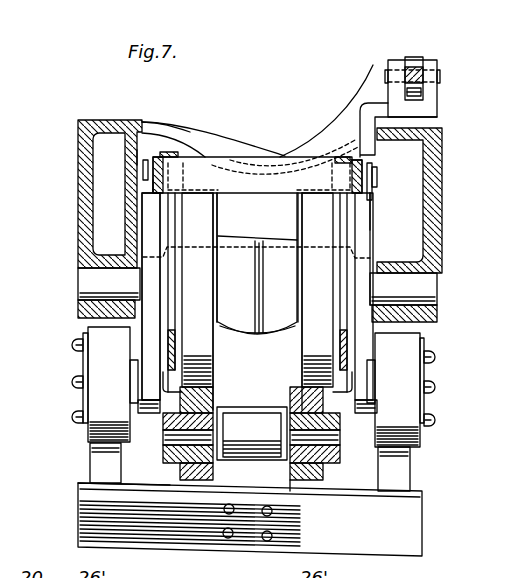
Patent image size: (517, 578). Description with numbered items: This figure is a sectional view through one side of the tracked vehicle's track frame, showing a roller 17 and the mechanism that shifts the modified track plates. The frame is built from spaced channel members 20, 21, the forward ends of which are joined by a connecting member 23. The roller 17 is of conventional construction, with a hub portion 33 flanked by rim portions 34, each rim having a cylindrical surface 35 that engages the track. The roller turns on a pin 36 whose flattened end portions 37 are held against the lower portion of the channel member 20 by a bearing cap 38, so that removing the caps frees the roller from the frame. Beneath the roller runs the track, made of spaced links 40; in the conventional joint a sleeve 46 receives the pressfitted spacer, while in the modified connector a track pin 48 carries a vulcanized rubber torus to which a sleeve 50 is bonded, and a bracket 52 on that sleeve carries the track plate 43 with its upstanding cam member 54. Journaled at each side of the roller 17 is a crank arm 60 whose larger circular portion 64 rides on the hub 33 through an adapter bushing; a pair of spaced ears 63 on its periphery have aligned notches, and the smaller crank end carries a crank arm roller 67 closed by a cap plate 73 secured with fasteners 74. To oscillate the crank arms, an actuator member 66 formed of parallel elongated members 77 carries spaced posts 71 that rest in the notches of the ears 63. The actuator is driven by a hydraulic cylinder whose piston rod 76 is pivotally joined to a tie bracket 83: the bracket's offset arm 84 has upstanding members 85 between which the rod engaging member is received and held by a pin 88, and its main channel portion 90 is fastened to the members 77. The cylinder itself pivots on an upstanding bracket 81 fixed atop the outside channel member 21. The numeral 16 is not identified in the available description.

The frame 16 is at (173, 469).
The roller 17 is at (283, 344).
The channel member 20 is at (88, 119).
The channel member 21 is at (442, 188).
The connecting member 23 is at (158, 124).
The hub portion 33 is at (257, 263).
The rim portion 34 is at (297, 226).
The cylindrical surface 35 is at (196, 183).
The pin 36 is at (148, 289).
The flattened end portion 37 is at (97, 275).
The bearing cap 38 is at (80, 310).
The link 40 is at (293, 485).
The track plate 43 is at (402, 545).
The sleeve 46 is at (320, 463).
The track pin 48 is at (167, 437).
The sleeve 50 is at (234, 417).
The bracket 52 is at (270, 482).
The cam member 54 is at (90, 478).
The crank arm 60 is at (148, 348).
The ear 63 is at (142, 155).
The circular portion 64 is at (154, 240).
The actuator member 66 is at (174, 150).
The crank arm roller 67 is at (83, 443).
The post 71 is at (143, 172).
The cap plate 73 is at (80, 402).
The fastener 74 is at (75, 382).
The piston rod 76 is at (441, 67).
The elongated member 77 is at (153, 183).
The bracket 81 is at (409, 56).
The tie bracket 83 is at (234, 153).
The offset arm 84 is at (361, 127).
The upstanding member 85 is at (388, 62).
The pin 88 is at (442, 85).
The main channel portion 90 is at (241, 165).